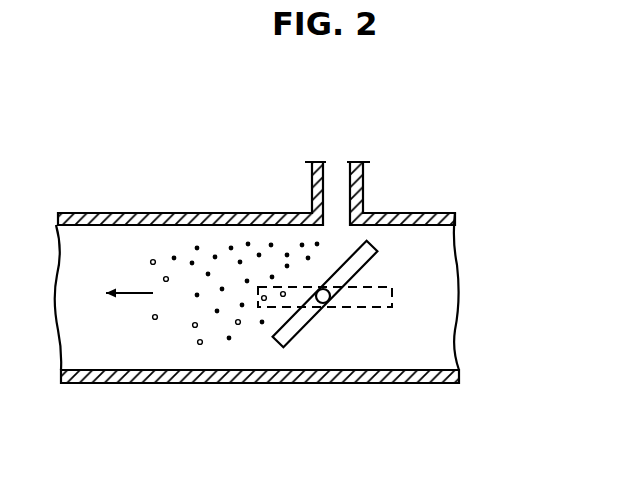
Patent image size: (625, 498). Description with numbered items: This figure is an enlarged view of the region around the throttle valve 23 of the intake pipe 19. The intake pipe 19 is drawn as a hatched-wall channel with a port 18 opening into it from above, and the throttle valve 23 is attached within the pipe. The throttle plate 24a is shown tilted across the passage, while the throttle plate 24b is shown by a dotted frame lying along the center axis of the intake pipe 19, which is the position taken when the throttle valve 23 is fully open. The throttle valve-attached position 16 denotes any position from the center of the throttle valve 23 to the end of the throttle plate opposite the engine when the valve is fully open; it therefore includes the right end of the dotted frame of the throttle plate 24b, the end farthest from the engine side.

The throttle valve-attached position 16 is at (401, 359).
The port 18 is at (337, 217).
The intake pipe 19 is at (257, 323).
The throttle valve 23 is at (327, 385).
The throttle plate 24a is at (298, 326).
The throttle plate 24b is at (367, 312).